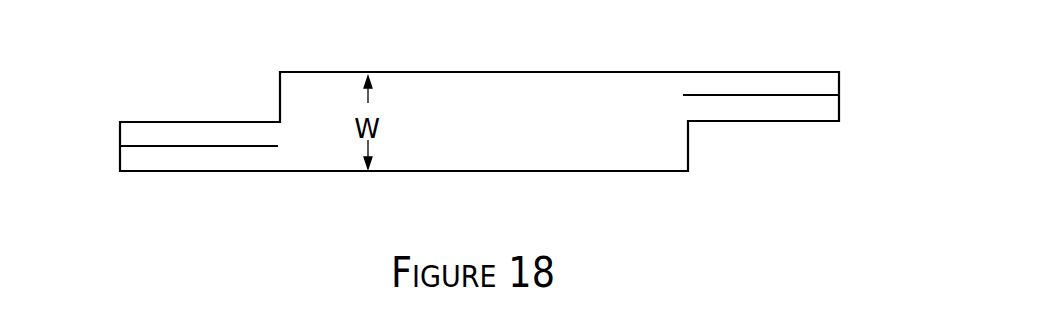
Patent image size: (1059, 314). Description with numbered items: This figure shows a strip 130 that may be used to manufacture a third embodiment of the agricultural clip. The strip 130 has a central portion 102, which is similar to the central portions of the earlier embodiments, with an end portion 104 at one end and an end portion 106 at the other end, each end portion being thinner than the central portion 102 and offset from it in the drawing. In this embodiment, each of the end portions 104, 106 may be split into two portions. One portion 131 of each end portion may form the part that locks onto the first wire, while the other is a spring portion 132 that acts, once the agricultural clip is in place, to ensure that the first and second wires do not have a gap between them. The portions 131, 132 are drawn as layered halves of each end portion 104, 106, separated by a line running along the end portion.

The central portion 102 is at (470, 138).
The end portion 104 is at (278, 177).
The end portion 106 is at (843, 179).
The strip 130 is at (633, 72).
The locking portion 131 is at (118, 160).
The spring portion 132 is at (118, 133).